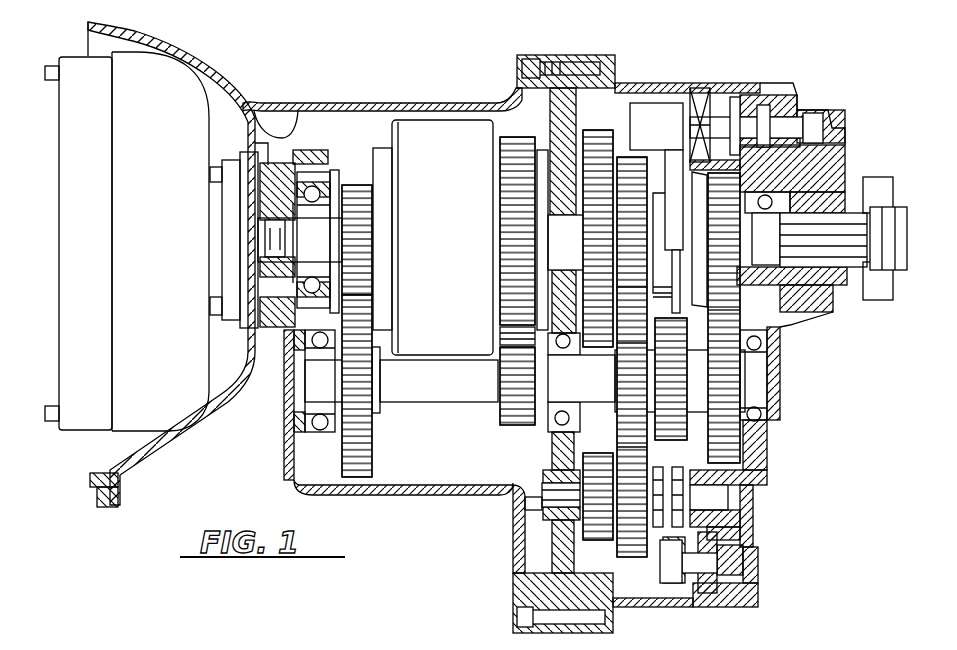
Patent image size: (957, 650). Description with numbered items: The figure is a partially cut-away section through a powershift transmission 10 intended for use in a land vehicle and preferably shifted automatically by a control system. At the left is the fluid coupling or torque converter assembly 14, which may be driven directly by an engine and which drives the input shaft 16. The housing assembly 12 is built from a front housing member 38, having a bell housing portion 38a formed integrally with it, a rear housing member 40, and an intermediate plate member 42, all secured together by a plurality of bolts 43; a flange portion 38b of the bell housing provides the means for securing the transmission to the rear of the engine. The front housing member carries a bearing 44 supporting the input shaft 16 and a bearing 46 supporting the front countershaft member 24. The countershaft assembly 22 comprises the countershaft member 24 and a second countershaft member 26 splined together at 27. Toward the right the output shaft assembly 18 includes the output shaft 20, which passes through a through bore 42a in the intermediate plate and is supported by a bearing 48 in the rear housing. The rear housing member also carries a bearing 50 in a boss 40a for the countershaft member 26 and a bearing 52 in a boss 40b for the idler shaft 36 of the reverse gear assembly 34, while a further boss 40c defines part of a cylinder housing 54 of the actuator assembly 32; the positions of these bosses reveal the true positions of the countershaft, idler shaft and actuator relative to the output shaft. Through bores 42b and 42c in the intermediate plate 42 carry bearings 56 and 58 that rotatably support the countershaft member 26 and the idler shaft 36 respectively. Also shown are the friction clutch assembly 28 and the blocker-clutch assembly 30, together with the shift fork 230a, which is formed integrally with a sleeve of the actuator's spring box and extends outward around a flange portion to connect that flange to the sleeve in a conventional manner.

The powershift transmission 10 is at (398, 76).
The housing assembly 12 is at (328, 101).
The fluid coupling or torque converter assembly 14 is at (170, 157).
The input shaft 16 is at (334, 200).
The output shaft assembly 18 is at (904, 264).
The output shaft 20 is at (778, 249).
The countershaft assembly 22 is at (440, 420).
The countershaft member 24 is at (432, 401).
The countershaft member 26 is at (596, 387).
The spline connection 27 is at (498, 401).
The friction clutch assembly 28 is at (460, 249).
The blocker-clutch assembly 30 is at (685, 306).
The actuator assembly 32 is at (668, 100).
The reverse gear assembly 34 is at (636, 562).
The idler shaft 36 is at (520, 490).
The front housing member 38 is at (377, 495).
The bell housing portion 38a is at (178, 440).
The flange portion 38b is at (100, 505).
The rear housing member 40 is at (694, 605).
The boss 40a is at (768, 436).
The boss 40b is at (745, 500).
The boss 40c is at (835, 135).
The intermediate plate member 42 is at (572, 56).
The through bore 42a is at (568, 216).
The through bore 42b is at (549, 437).
The through bore 42c is at (542, 500).
The bolt 43 is at (601, 65).
The bearing 44 is at (311, 172).
The bearing 46 is at (293, 404).
The bearing 48 is at (762, 282).
The bearing 50 is at (772, 416).
The bearing 52 is at (745, 527).
The cylinder housing 54 is at (742, 95).
The bearing 56 is at (500, 340).
The bearing 58 is at (542, 508).
The shift fork 230a is at (675, 213).